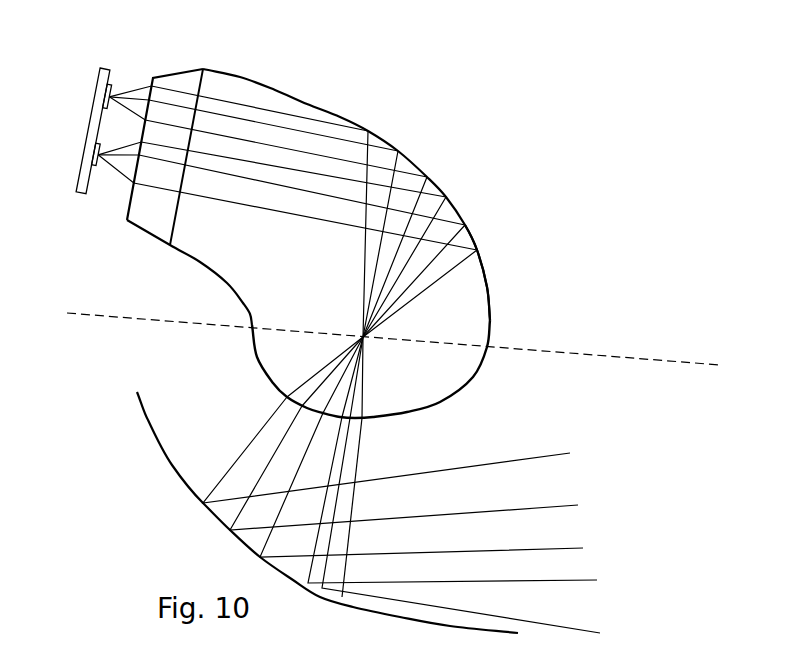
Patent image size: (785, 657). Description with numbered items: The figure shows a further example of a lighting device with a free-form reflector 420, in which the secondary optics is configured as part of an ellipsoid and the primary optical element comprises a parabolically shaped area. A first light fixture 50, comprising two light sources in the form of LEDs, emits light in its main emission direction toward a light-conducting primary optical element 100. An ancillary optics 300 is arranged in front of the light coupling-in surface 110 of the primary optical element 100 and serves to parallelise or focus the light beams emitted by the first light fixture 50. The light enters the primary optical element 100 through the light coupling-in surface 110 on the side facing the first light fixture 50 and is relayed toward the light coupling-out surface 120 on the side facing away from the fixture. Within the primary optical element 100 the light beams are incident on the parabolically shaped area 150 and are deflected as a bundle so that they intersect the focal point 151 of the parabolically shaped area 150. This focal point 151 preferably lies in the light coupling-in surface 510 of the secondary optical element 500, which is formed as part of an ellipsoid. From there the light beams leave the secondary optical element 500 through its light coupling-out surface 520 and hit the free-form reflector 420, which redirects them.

The first light fixture 50 is at (97, 103).
The primary optical element 100 is at (345, 213).
The light coupling-in surface 110 is at (177, 210).
The light coupling-out surface 120 is at (318, 333).
The parabolically shaped area 150 is at (447, 197).
The focal point 151 is at (408, 325).
The ancillary optics 300 is at (187, 82).
The secondary optical element 500 is at (417, 376).
The light coupling-in surface of the secondary optical element 510 is at (287, 333).
The light coupling-out surface of the secondary optical element 520 is at (441, 403).
The free-form reflector 420 is at (212, 517).